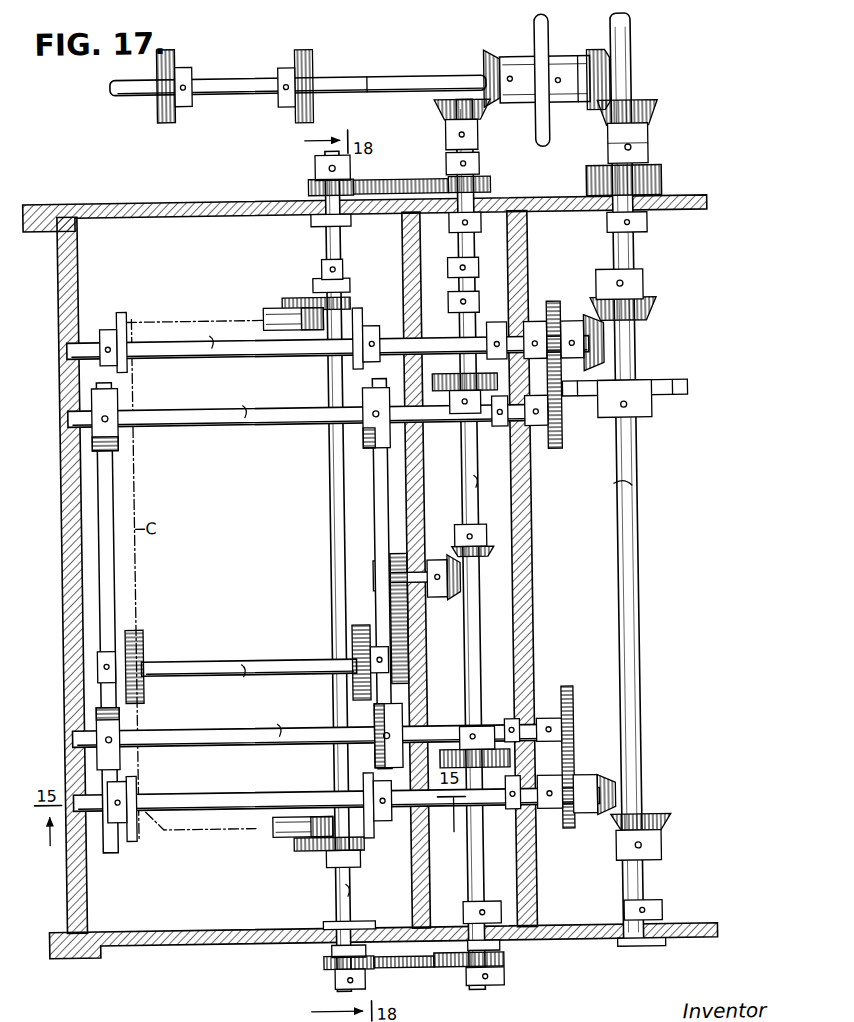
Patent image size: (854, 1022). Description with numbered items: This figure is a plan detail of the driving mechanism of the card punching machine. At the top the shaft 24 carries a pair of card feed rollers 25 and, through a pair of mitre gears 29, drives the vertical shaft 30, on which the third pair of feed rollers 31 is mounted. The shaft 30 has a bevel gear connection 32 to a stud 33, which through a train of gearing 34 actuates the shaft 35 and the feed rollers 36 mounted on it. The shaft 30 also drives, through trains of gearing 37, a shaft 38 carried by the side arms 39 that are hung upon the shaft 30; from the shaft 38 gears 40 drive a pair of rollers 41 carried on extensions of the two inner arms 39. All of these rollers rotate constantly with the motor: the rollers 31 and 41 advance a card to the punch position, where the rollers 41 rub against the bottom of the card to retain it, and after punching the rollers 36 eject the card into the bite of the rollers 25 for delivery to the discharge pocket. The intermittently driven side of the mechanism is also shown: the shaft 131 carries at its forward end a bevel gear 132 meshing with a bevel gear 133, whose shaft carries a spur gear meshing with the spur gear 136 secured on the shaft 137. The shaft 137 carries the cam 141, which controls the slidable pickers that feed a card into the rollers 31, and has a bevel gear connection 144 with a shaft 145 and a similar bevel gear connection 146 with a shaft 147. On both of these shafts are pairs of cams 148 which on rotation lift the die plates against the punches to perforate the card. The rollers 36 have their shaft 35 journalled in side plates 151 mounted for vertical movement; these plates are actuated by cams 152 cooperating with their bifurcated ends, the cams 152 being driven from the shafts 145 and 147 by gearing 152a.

The shaft 24 is at (236, 80).
The card feed rollers 25 is at (304, 117).
The mitre gears 29 is at (458, 100).
The shaft 30 is at (477, 647).
The feed rollers 31 is at (450, 392).
The bevel gear connection 32 is at (456, 550).
The stud 33 is at (373, 575).
The train of gearing 34 is at (407, 592).
The shaft 35 is at (200, 665).
The feed rollers 36 is at (140, 650).
The trains of gearing 37 is at (423, 177).
The shaft 38 is at (331, 518).
The side arms 39 is at (318, 175).
The gears 40 is at (284, 300).
The rollers 41 is at (267, 313).
The shaft 131 is at (614, 80).
The bevel gear 132 is at (600, 69).
The bevel gear 133 is at (660, 110).
The spur gear 136 is at (666, 181).
The shaft 137 is at (640, 34).
The cam 141 is at (691, 391).
The bevel gear connection 144 is at (609, 346).
The shaft 145 is at (272, 355).
The bevel gear connection 146 is at (616, 795).
The shaft 147 is at (187, 807).
The cams 148 is at (126, 310).
The side plates 151 is at (99, 471).
The cams 152 is at (100, 430).
The gearing 152a is at (563, 400).